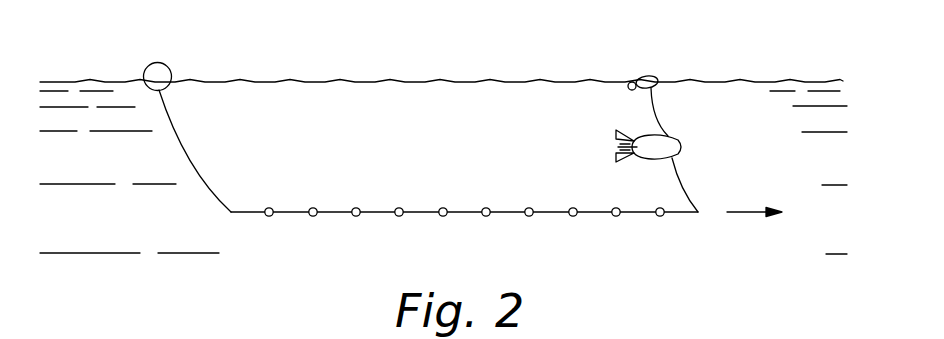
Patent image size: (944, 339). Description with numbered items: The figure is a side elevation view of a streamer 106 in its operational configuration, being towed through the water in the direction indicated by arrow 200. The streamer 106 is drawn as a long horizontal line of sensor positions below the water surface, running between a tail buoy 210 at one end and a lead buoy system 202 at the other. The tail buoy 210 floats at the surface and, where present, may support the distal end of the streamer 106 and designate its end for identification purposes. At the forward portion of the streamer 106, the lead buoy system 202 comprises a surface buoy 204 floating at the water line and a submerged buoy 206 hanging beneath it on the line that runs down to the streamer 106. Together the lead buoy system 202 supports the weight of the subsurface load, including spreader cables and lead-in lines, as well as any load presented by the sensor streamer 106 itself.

The streamer 106 is at (593, 213).
The arrow 200 is at (741, 213).
The lead buoy system 202 is at (680, 57).
The surface buoy 204 is at (641, 76).
The submerged buoy 206 is at (683, 146).
The tail buoy 210 is at (159, 62).